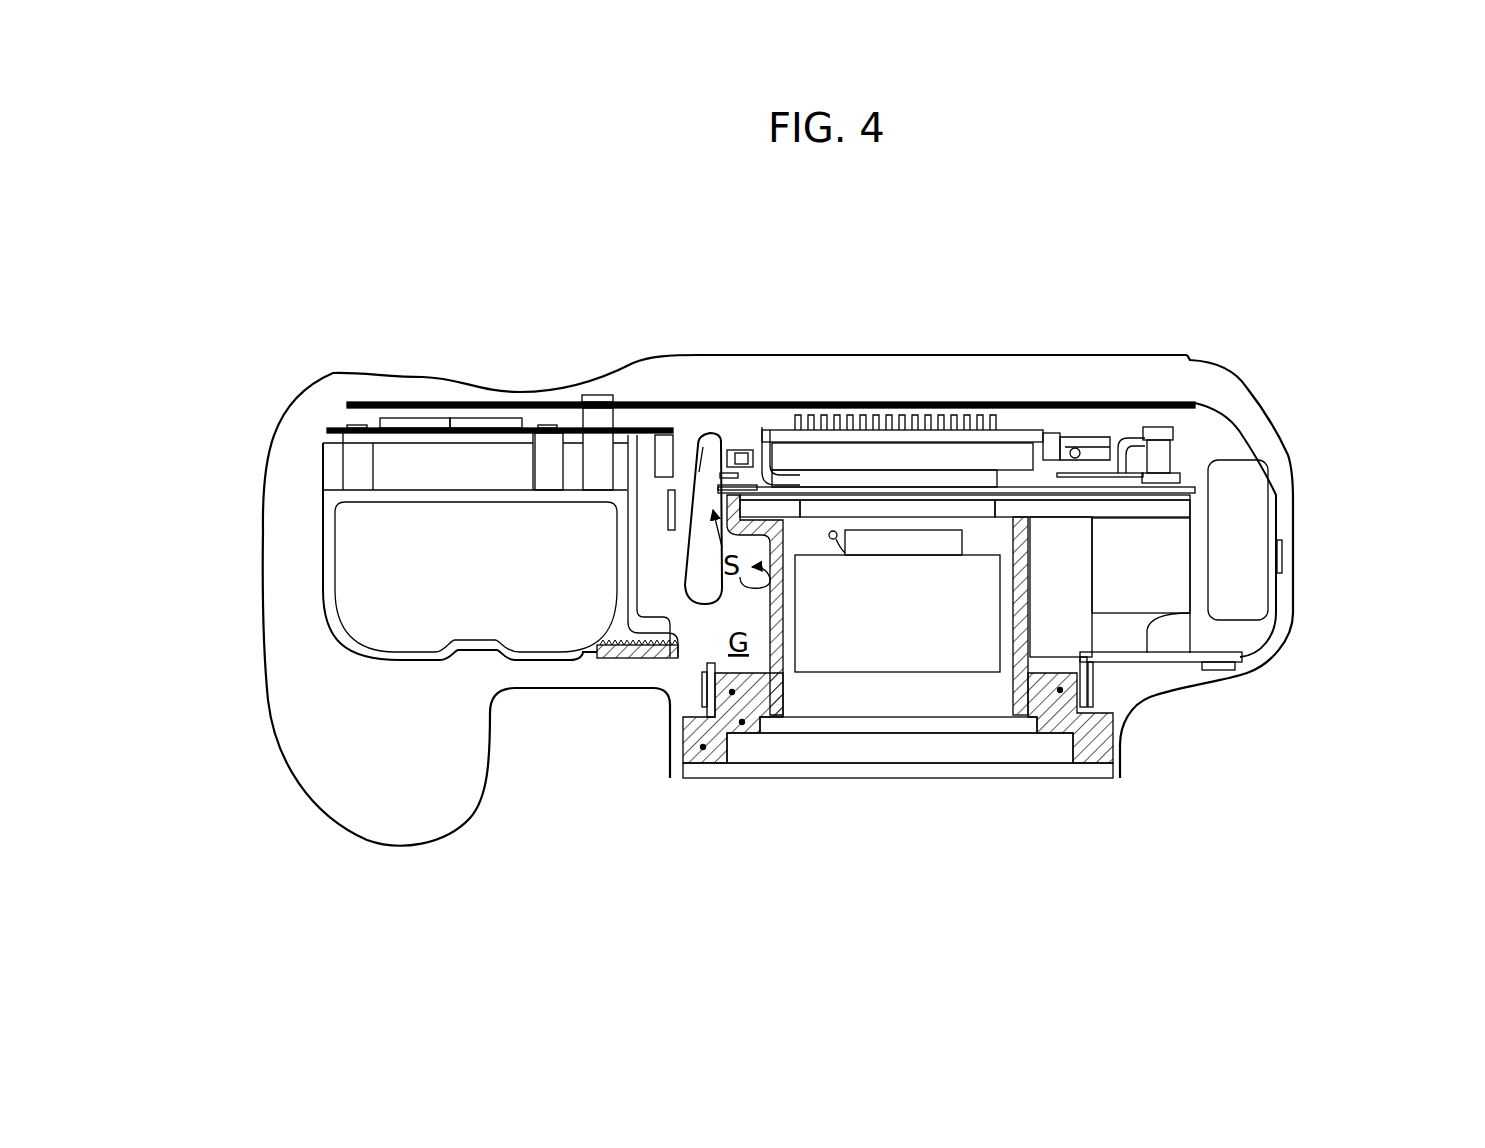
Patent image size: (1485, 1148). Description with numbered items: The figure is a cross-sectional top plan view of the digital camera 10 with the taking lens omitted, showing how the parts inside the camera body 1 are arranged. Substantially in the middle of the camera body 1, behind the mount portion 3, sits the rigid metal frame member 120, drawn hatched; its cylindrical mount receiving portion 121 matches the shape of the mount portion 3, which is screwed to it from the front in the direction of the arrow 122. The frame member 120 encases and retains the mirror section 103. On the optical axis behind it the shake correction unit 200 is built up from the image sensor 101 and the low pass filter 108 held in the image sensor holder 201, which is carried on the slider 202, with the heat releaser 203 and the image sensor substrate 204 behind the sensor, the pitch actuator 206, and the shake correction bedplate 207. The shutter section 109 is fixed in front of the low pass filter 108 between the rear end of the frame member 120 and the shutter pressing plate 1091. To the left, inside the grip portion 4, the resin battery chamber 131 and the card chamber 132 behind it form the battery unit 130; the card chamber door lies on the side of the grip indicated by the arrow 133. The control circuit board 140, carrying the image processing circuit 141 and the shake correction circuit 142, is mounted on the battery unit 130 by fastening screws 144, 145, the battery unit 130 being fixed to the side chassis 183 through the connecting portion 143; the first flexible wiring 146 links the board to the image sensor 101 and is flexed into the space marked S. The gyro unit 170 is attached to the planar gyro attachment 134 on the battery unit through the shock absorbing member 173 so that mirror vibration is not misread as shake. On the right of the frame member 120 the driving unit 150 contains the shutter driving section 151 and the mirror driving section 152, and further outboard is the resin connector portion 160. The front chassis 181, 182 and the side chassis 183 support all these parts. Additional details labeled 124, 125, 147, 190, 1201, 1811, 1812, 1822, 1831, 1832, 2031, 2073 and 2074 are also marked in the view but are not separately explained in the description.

The camera body 1 is at (1305, 478).
The mount portion 3 is at (924, 772).
The grip portion 4 is at (352, 810).
The digital camera 10 is at (1300, 417).
The image sensor 101 is at (905, 440).
The mirror section 103 is at (897, 613).
The low pass filter 108 is at (880, 468).
The shutter section 109 is at (985, 508).
The frame member 120 is at (733, 695).
The mount receiving portion 121 is at (703, 750).
The arrow 122 is at (1093, 800).
The frame member 124 is at (744, 725).
The frame member 125 is at (1060, 693).
The battery unit 130 is at (178, 553).
The battery chamber 131 is at (340, 627).
The card chamber 132 is at (383, 462).
The arrow 133 is at (268, 455).
The gyro attachment 134 is at (483, 645).
The control circuit board 140 is at (528, 428).
The image processing circuit 141 is at (417, 420).
The shake correction circuit 142 is at (483, 420).
The connecting portion 143 is at (595, 473).
The fastening screw 144 is at (360, 483).
The fastening screw 145 is at (547, 473).
The first flexible wiring 146 is at (676, 586).
The contact member 147 is at (668, 460).
The driving unit 150 is at (1397, 575).
The shutter driving section 151 is at (1167, 580).
The mirror driving section 152 is at (1065, 606).
The connector portion 160 is at (1248, 522).
The gyro unit 170 is at (623, 668).
The shock absorbing member 173 is at (620, 645).
The front chassis 181 is at (1155, 660).
The front chassis 182 is at (685, 730).
The side chassis 183 is at (975, 470).
The grip cover 190 is at (290, 743).
The shake correction unit 200 is at (1072, 445).
The image sensor holder 201 is at (778, 465).
The slider 202 is at (762, 455).
The heat releaser 203 is at (802, 440).
The image sensor substrate 204 is at (947, 430).
The pitch actuator 206 is at (1085, 473).
The shake correction bedplate 207 is at (738, 450).
The shutter pressing plate 1091 is at (720, 470).
The frame wall 1201 is at (775, 590).
The plate tab 1811 is at (1215, 670).
The plate leg 1812 is at (1095, 692).
The base leg 1822 is at (705, 684).
The rear cover protrusion 1831 is at (1287, 562).
The top plate tab 1832 is at (598, 393).
The lever top portion 2031 is at (700, 452).
The spool base 2073 is at (1178, 477).
The spool cap 2074 is at (1165, 430).